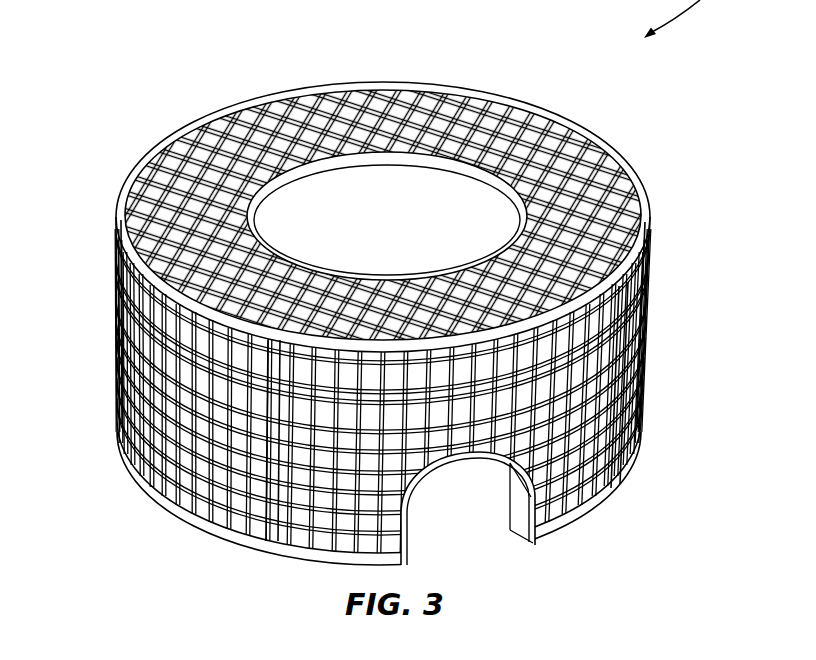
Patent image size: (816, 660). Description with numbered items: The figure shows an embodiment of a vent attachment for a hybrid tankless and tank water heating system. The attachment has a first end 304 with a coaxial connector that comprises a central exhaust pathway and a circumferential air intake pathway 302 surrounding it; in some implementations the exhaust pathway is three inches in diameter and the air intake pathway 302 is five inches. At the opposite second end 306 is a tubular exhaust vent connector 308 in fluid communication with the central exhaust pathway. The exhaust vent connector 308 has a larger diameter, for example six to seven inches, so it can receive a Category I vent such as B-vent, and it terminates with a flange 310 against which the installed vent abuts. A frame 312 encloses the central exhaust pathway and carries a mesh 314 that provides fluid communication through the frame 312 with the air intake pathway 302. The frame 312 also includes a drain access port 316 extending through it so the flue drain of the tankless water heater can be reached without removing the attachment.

The circumferential air intake pathway 302 is at (140, 196).
The first end 304 is at (268, 552).
The second end 306 is at (482, 172).
The exhaust vent connector 308 is at (232, 122).
The flange 310 is at (373, 278).
The frame 312 is at (634, 203).
The mesh 314 is at (120, 357).
The drain access port 316 is at (523, 502).